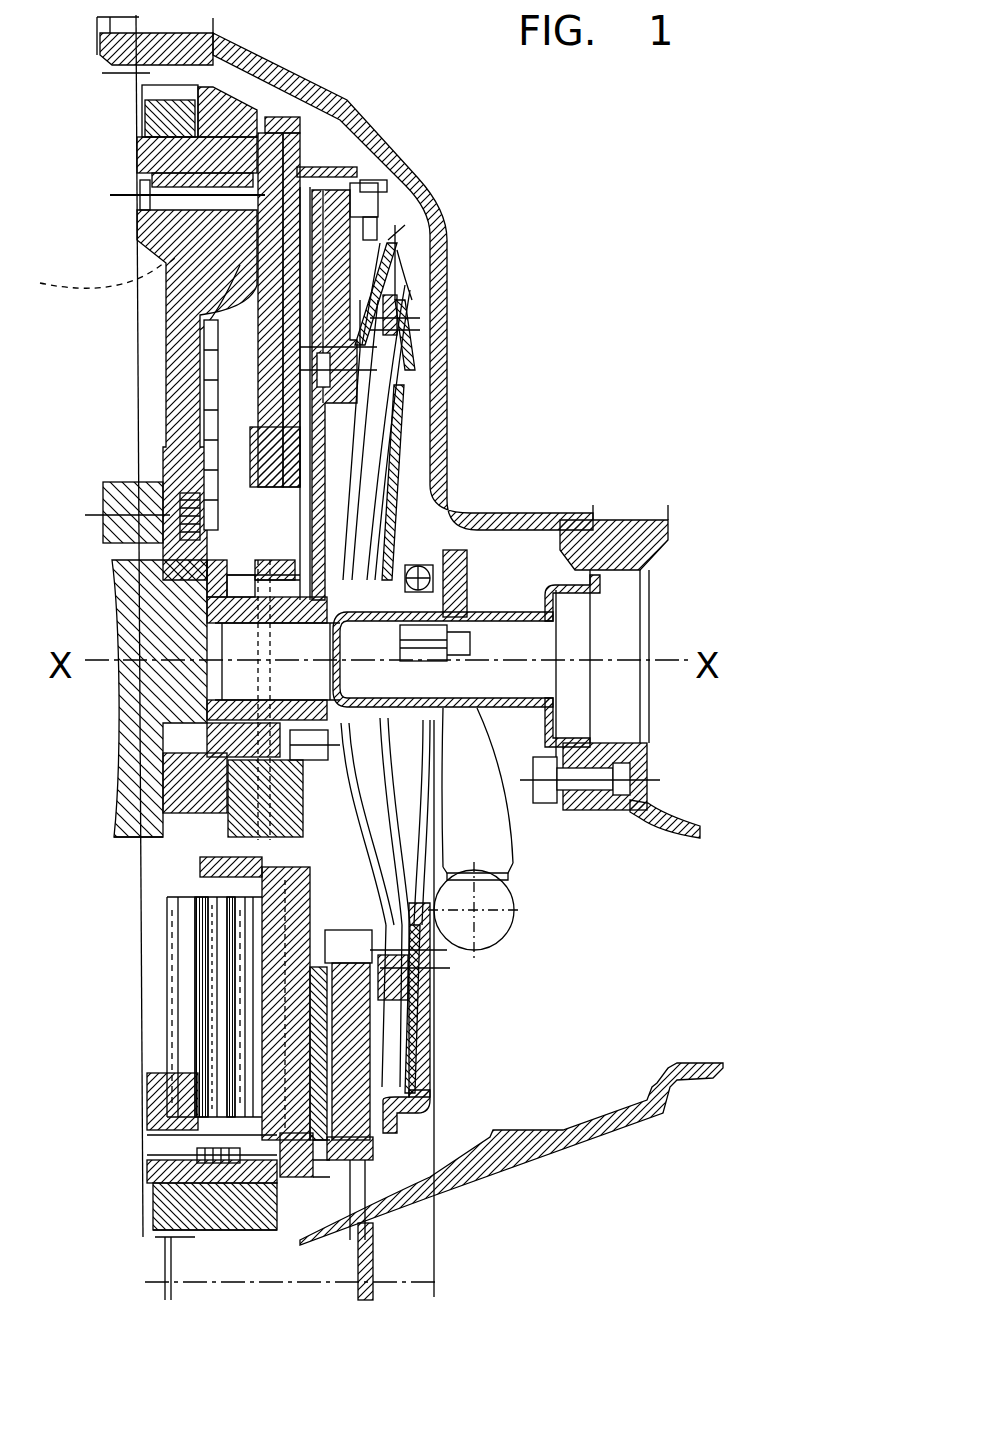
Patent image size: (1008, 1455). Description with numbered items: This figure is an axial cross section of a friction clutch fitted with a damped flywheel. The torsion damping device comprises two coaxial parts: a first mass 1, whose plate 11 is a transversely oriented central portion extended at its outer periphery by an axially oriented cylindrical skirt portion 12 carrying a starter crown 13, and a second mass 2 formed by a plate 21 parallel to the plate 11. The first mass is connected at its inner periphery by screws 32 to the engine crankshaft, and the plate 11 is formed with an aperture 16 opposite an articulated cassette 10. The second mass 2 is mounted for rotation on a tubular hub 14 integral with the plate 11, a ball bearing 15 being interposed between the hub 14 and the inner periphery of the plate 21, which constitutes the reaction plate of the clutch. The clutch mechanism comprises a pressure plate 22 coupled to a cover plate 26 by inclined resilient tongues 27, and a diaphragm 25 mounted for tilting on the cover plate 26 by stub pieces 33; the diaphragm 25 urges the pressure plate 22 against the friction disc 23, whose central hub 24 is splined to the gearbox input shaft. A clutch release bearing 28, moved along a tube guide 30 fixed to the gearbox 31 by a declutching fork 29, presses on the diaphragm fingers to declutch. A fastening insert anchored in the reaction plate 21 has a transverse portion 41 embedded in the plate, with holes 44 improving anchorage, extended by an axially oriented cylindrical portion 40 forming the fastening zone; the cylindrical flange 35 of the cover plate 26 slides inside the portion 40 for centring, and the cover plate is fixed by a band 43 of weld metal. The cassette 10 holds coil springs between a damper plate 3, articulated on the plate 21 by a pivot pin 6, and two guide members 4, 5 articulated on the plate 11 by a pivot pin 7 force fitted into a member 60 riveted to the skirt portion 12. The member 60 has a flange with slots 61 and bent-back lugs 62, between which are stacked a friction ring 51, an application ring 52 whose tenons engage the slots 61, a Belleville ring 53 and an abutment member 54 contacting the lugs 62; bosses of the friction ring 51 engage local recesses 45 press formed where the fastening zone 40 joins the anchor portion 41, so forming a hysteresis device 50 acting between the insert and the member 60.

The first mass 1 is at (97, 232).
The second mass 2 is at (332, 143).
The damper plate 3 is at (250, 960).
The guide member 4 is at (245, 1063).
The guide member 5 is at (218, 1108).
The pivot pin 6 is at (215, 885).
The pivot pin 7 is at (225, 1162).
The articulated cassette 10 is at (182, 1023).
The plate of first mass 11 is at (225, 378).
The cylindrical skirt portion 12 is at (248, 105).
The starter crown 13 is at (142, 105).
The tubular hub 14 is at (215, 603).
The bearing 15 is at (215, 583).
The aperture 16 is at (230, 865).
The reaction plate 21 is at (240, 415).
The pressure plate 22 is at (330, 195).
The friction disc 23 is at (347, 452).
The central hub 24 is at (215, 708).
The diaphragm 25 is at (397, 252).
The cover plate 26 is at (430, 1073).
The inclined resilient tongues 27 is at (398, 325).
The clutch release bearing 28 is at (452, 548).
The declutching fork 29 is at (480, 850).
The tube guide 30 is at (527, 607).
The gearbox 31 is at (633, 527).
The screws 32 is at (103, 498).
The stub pieces 33 is at (114, 835).
The axially oriented flange 35 is at (373, 1240).
The fastening zone 40 is at (433, 1220).
The transverse portion of insert 41 is at (245, 265).
The band of weld metal 43 is at (390, 1133).
The holes 44 is at (101, 278).
The local recesses 45 is at (139, 178).
The hysteresis device 50 is at (313, 113).
The friction ring 51 is at (137, 150).
The application ring 52 is at (265, 1217).
The axially acting resilient ring 53 is at (297, 1230).
The abutment member 54 is at (313, 1230).
The member 60 is at (222, 1228).
The slots 61 is at (285, 120).
The lugs 62 is at (320, 1230).